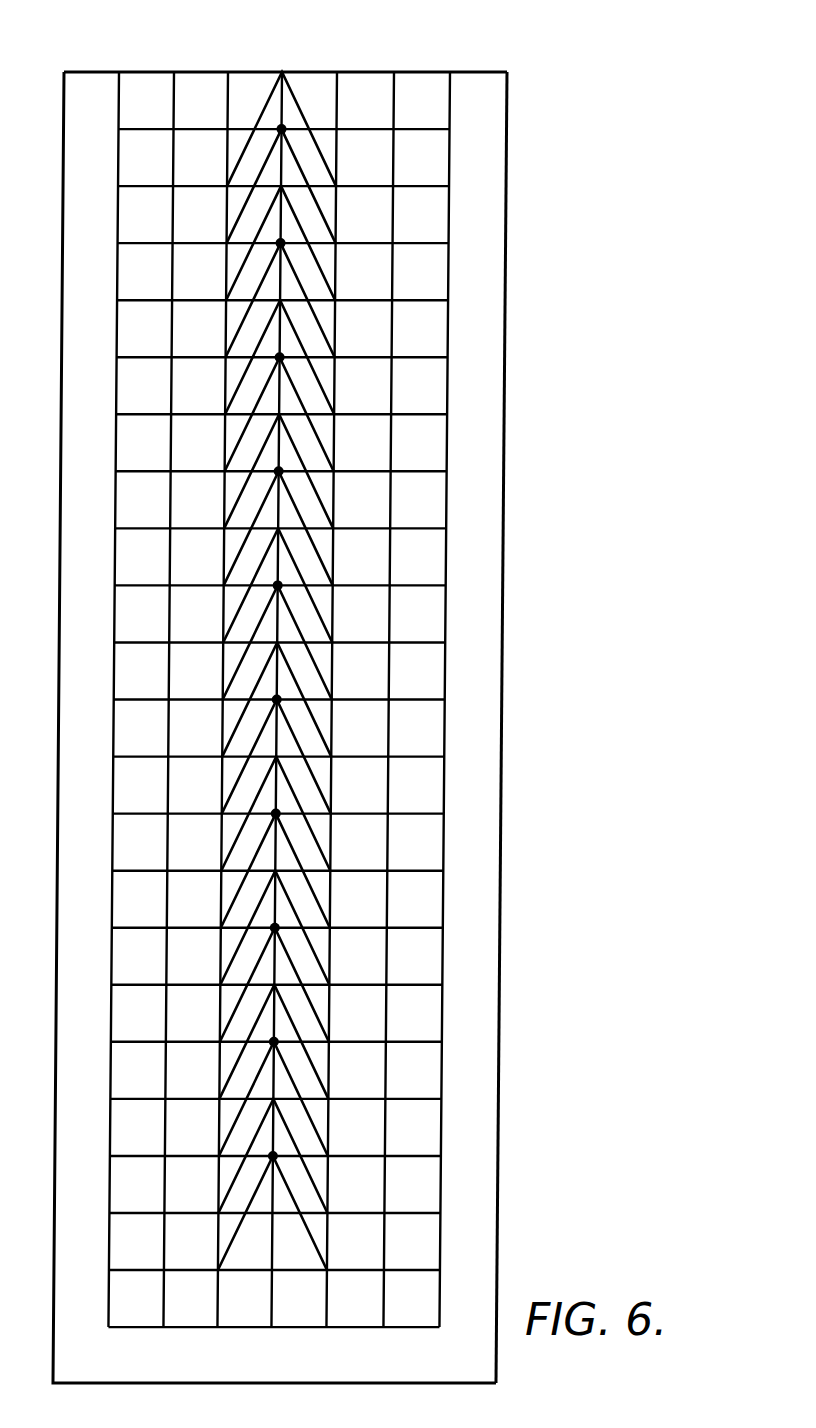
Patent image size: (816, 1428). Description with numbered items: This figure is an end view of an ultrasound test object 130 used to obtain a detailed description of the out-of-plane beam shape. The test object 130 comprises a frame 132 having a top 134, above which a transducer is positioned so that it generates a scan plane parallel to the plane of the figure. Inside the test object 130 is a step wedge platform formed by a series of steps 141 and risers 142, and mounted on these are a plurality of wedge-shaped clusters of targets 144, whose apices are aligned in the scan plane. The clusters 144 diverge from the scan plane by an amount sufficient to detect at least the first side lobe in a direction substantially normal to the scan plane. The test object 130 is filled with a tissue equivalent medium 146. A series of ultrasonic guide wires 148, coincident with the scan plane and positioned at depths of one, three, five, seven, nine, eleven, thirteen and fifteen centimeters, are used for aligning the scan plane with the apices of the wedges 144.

The test object 130 is at (505, 402).
The frame 132 is at (473, 707).
The top 134 is at (435, 72).
The steps 141 is at (327, 378).
The risers 142 is at (320, 893).
The wedge-shaped clusters of targets 144 is at (323, 160).
The tissue equivalent medium 146 is at (415, 513).
The ultrasonic guide wires 148 is at (280, 471).